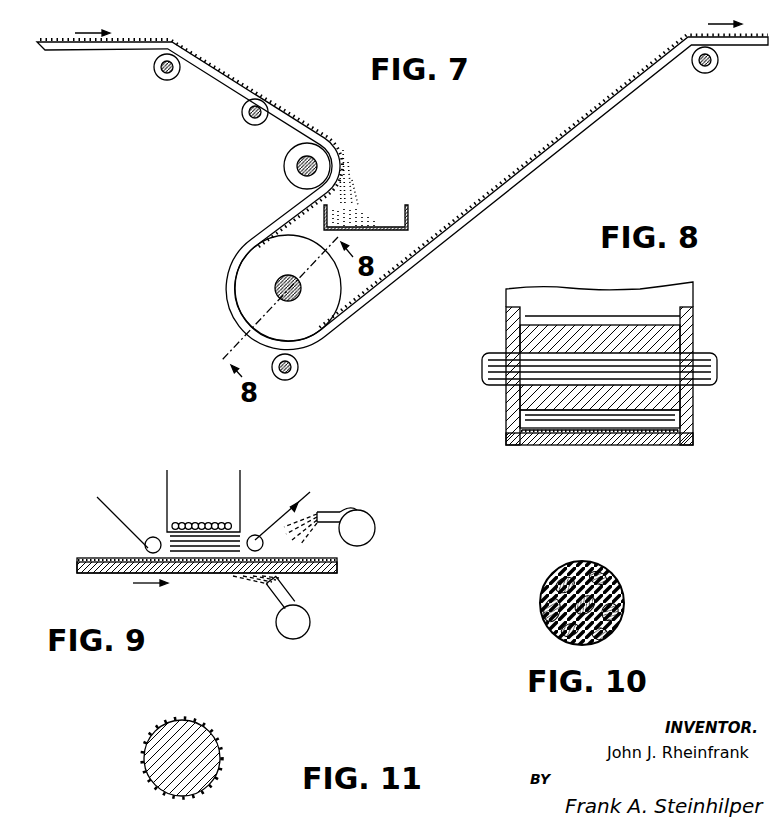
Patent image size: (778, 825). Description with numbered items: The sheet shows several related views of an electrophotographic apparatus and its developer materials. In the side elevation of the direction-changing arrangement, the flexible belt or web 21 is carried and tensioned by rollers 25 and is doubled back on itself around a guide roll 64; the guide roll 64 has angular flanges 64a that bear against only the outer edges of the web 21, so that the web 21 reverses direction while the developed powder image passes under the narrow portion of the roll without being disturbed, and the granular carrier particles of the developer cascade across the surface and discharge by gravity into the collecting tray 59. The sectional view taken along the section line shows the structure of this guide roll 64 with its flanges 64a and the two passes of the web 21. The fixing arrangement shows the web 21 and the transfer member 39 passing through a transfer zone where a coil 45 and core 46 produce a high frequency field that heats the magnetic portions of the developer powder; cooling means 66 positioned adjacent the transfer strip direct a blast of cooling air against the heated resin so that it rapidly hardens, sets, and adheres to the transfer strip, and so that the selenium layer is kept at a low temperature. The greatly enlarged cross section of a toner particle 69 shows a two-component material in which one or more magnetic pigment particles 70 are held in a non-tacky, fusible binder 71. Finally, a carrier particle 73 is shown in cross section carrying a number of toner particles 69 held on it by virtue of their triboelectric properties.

In FIG. 7, the web 21 is at (110, 62).
In FIG. 8, the web 21 is at (549, 287).
In FIG. 9, the web 21 is at (96, 580).
In FIG. 7, the rollers 25 is at (163, 80).
In FIG. 7, the collecting tray 59 is at (410, 206).
In FIG. 7, the guide roll 64 is at (236, 291).
In FIG. 8, the guide roll 64 is at (562, 338).
In FIG. 8, the angular flanges 64a is at (692, 323).
In FIG. 9, the transfer member 39 is at (105, 513).
In FIG. 9, the coil 45 is at (184, 518).
In FIG. 9, the core 46 is at (170, 538).
In FIG. 9, the cooling means 66 is at (352, 511).
In FIG. 10, the toner particle 69 is at (583, 590).
In FIG. 11, the toner particle 69 is at (156, 729).
In FIG. 10, the magnetic pigment particles 70 is at (595, 562).
In FIG. 10, the binder 71 is at (541, 601).
In FIG. 11, the carrier particle 73 is at (189, 753).